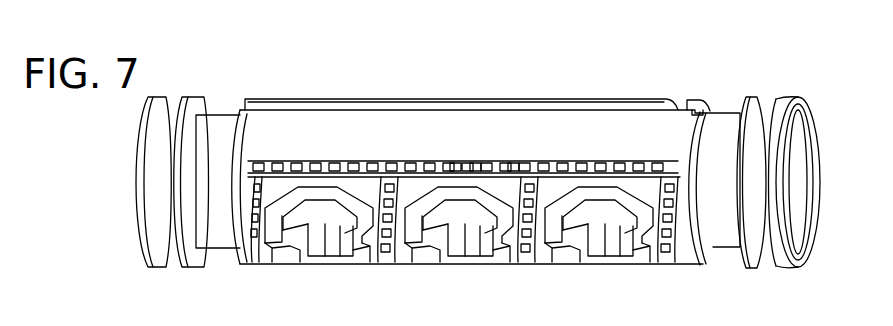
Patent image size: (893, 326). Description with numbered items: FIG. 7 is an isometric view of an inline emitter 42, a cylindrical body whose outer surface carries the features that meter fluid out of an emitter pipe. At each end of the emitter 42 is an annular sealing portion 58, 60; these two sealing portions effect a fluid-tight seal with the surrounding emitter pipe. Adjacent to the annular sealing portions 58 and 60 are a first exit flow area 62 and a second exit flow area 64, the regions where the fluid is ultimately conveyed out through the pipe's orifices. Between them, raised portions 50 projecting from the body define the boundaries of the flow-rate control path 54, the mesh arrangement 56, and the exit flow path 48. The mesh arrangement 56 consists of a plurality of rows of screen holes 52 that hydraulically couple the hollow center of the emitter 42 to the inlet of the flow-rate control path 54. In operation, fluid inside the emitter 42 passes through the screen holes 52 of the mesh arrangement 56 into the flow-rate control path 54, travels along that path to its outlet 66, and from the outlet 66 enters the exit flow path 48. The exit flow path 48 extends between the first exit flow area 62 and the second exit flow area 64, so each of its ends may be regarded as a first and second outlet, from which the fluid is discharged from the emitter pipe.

The emitter 42 is at (478, 174).
The exit flow path 48 is at (376, 105).
The raised portion 50 is at (328, 250).
The screen holes 52 is at (512, 162).
The flow-rate control path 54 is at (507, 227).
The mesh arrangement 56 is at (303, 160).
The annular sealing portion 58 is at (207, 270).
The annular sealing portion 60 is at (807, 268).
The exit flow area 62 is at (222, 191).
The exit flow area 64 is at (727, 192).
The outlet 66 is at (680, 100).